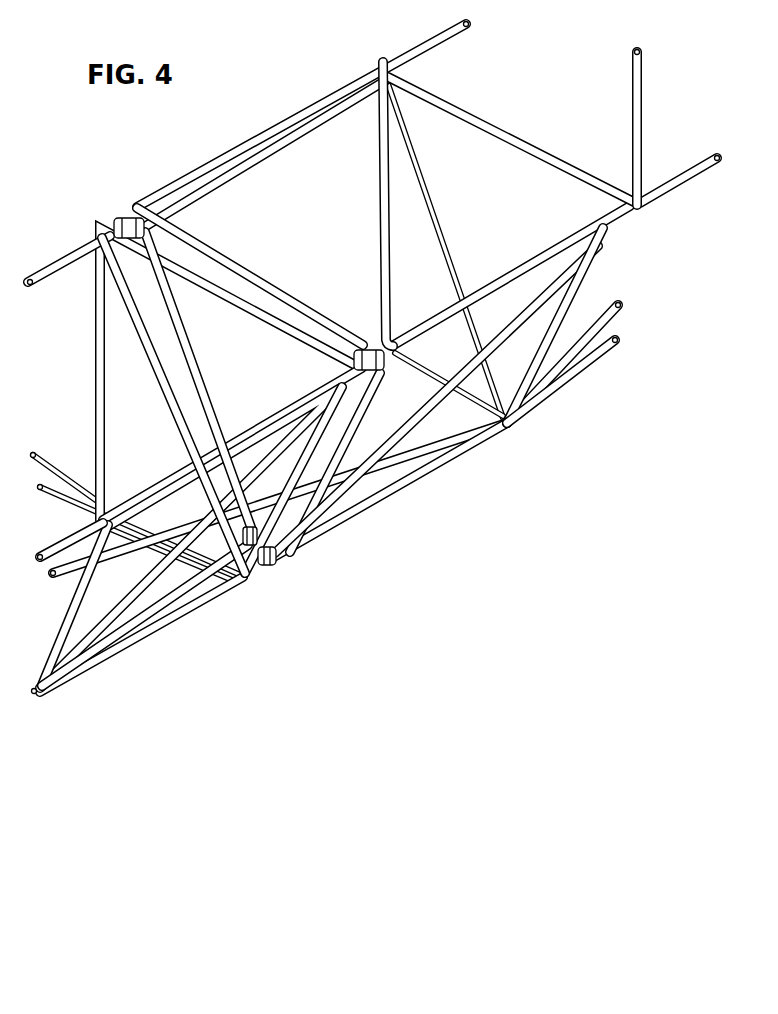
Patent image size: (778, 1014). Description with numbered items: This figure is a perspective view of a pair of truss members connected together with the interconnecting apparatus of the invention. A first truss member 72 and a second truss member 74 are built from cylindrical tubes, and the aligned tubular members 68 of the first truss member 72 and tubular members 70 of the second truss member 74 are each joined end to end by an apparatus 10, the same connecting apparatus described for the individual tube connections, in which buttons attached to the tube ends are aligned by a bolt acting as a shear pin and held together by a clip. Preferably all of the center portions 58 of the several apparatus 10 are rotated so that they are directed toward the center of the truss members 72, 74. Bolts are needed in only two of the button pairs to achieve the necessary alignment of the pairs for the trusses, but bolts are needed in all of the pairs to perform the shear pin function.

The interconnecting apparatus 10 is at (118, 217).
The center portion 58 is at (183, 227).
The tubular member 68 is at (270, 132).
The tubular member 70 is at (71, 252).
The first truss member 72 is at (456, 450).
The second truss member 74 is at (115, 656).